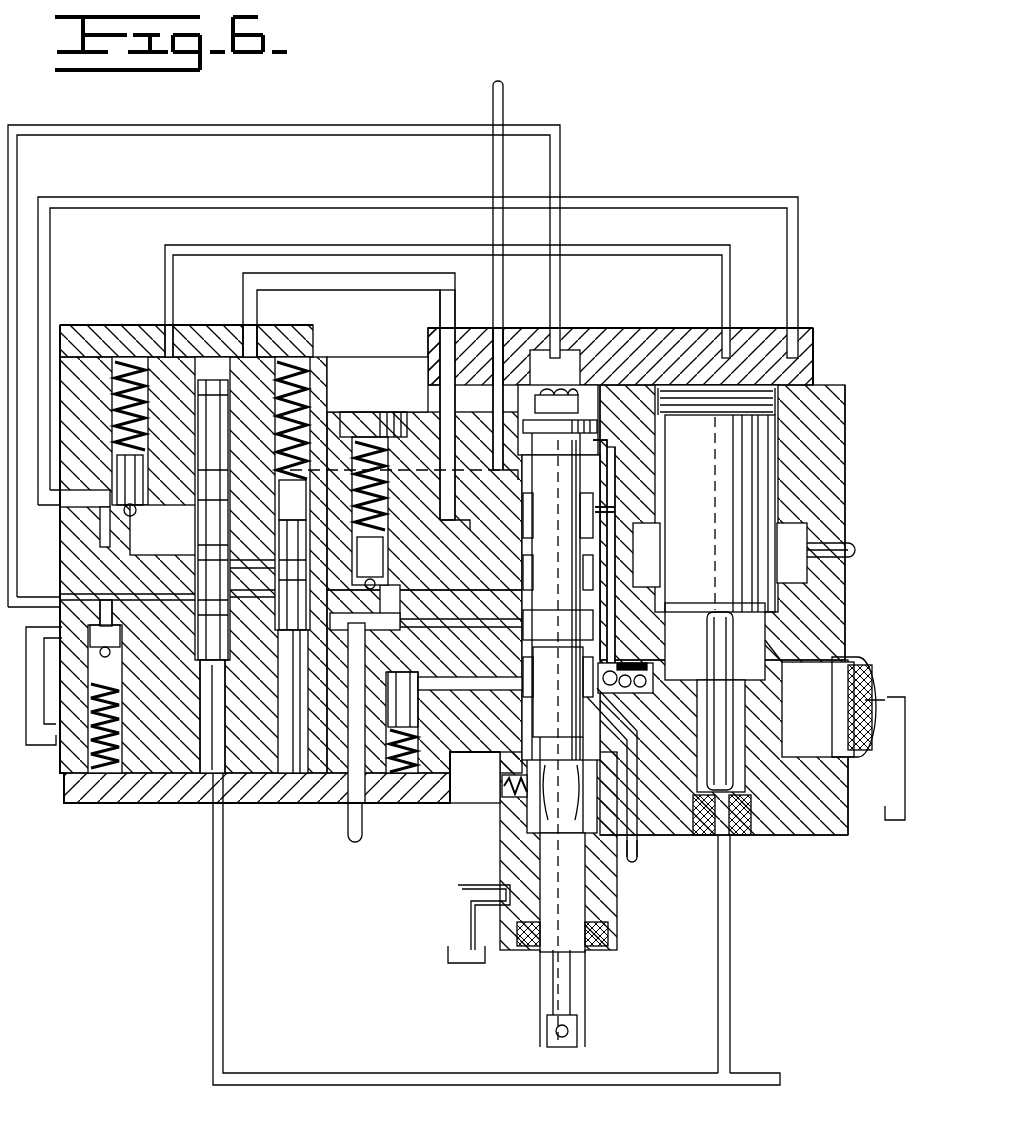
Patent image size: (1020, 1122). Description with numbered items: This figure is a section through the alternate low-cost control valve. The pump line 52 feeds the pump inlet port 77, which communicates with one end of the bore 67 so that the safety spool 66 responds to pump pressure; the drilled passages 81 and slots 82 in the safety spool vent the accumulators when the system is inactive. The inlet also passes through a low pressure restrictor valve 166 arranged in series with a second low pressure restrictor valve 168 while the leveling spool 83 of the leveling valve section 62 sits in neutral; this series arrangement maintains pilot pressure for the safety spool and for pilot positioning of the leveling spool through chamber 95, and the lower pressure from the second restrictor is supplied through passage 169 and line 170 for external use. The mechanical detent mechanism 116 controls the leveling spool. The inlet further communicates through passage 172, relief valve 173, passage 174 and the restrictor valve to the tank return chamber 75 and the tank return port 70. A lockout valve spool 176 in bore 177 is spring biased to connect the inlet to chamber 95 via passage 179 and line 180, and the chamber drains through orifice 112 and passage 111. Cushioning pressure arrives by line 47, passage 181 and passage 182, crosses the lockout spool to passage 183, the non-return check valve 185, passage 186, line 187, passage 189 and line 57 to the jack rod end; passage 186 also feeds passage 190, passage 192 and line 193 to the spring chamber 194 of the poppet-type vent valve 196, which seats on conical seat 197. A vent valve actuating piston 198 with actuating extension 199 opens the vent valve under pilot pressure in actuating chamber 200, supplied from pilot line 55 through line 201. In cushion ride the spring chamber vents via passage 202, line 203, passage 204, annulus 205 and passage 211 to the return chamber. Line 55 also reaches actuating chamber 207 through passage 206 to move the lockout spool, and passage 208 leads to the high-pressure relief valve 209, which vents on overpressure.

The line 180 is at (320, 132).
The line 47 is at (503, 100).
The line 187 is at (50, 268).
The line 193 is at (196, 256).
The line 203 is at (410, 290).
The passage 204 is at (432, 346).
The passage 181 is at (497, 352).
The chamber 95 is at (588, 382).
The spring chamber 194 is at (658, 388).
The passage 189 is at (818, 388).
The passage 192 is at (165, 356).
The passage 202 is at (254, 349).
The non-return check valve 185 is at (117, 468).
The passage 182 is at (432, 470).
The passage 211 is at (560, 714).
The orifice 112 is at (615, 478).
The passage 111 is at (615, 512).
The vent valve 196 is at (728, 474).
The annulus 205 is at (515, 528).
The low pressure restrictor valve 166 is at (388, 540).
The passage 186 is at (85, 520).
The passage 190 is at (136, 513).
The passage 183 is at (163, 531).
The slots 82 is at (306, 498).
The drilled passages 81 is at (306, 545).
The safety spool 66 is at (278, 566).
The bore 67 is at (278, 590).
The passage 208 is at (110, 574).
The passage 179 is at (178, 612).
The lockout valve spool 176 is at (197, 650).
The bore 177 is at (226, 650).
The passage 172 is at (404, 598).
The passage 174 is at (476, 676).
The line 57 is at (852, 545).
The conical seat 197 is at (778, 588).
The tank return chamber 75 is at (755, 632).
The tank return port 70 is at (855, 665).
The actuating extension 199 is at (727, 665).
The high-pressure relief valve 209 is at (120, 665).
The actuating chamber 207 is at (222, 680).
The passage 206 is at (212, 716).
The pump inlet port 77 is at (350, 700).
The relief valve 173 is at (418, 712).
The low pressure restrictor valve 168 is at (615, 692).
The passage 169 is at (636, 740).
The vent valve actuating piston 198 is at (692, 760).
The actuating chamber 200 is at (748, 790).
The pump line 52 is at (345, 830).
The mechanical detent mechanism 116 is at (487, 818).
The line 170 is at (640, 855).
The line 201 is at (728, 915).
The leveling valve section 62 is at (431, 973).
The leveling spool 83 is at (540, 990).
The pilot line 55 is at (452, 1073).